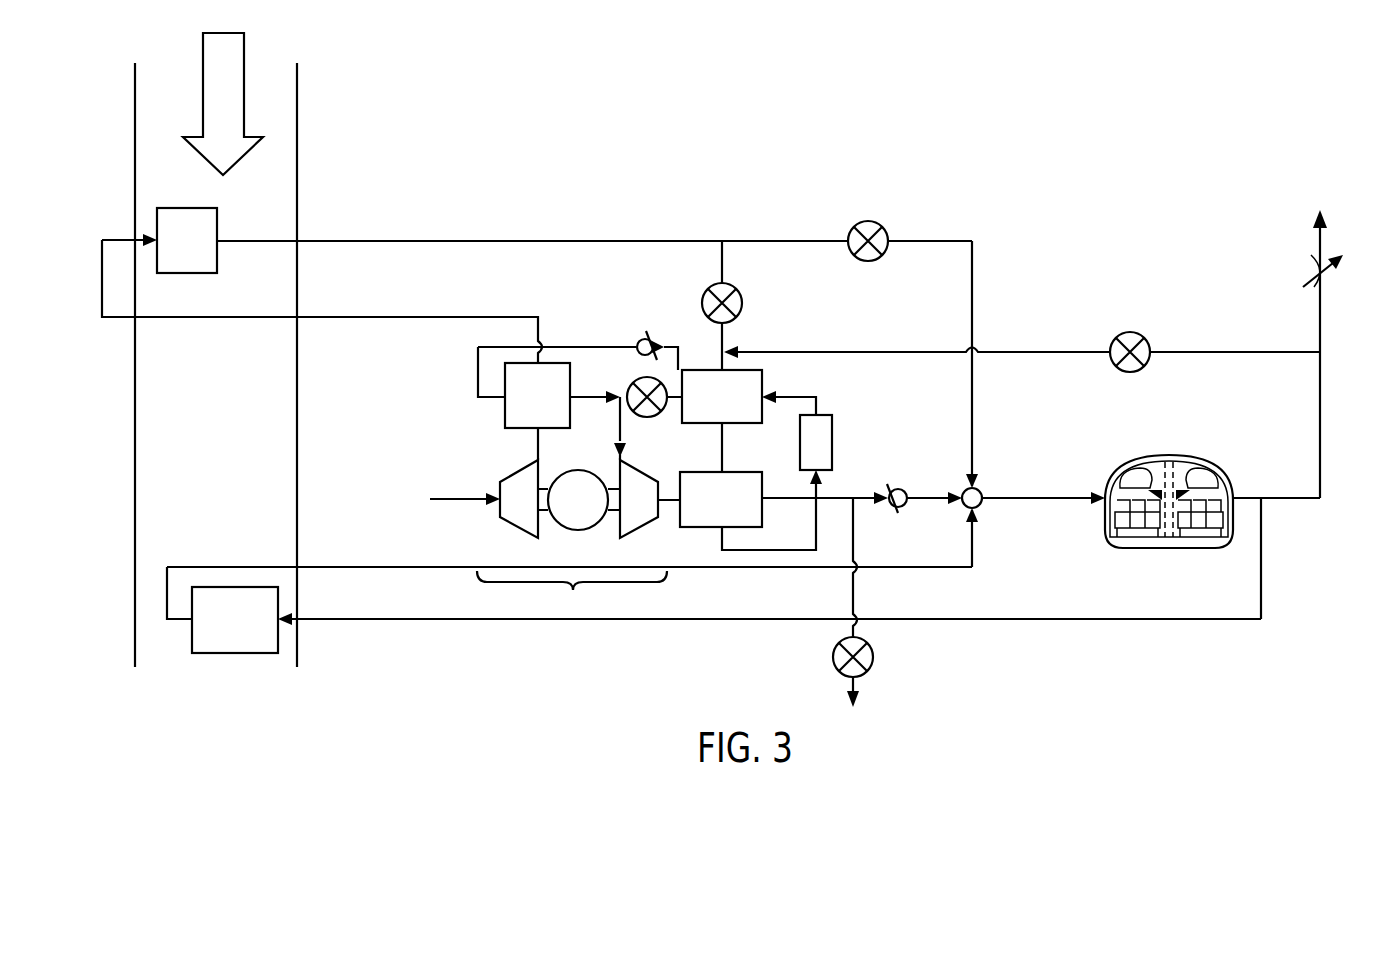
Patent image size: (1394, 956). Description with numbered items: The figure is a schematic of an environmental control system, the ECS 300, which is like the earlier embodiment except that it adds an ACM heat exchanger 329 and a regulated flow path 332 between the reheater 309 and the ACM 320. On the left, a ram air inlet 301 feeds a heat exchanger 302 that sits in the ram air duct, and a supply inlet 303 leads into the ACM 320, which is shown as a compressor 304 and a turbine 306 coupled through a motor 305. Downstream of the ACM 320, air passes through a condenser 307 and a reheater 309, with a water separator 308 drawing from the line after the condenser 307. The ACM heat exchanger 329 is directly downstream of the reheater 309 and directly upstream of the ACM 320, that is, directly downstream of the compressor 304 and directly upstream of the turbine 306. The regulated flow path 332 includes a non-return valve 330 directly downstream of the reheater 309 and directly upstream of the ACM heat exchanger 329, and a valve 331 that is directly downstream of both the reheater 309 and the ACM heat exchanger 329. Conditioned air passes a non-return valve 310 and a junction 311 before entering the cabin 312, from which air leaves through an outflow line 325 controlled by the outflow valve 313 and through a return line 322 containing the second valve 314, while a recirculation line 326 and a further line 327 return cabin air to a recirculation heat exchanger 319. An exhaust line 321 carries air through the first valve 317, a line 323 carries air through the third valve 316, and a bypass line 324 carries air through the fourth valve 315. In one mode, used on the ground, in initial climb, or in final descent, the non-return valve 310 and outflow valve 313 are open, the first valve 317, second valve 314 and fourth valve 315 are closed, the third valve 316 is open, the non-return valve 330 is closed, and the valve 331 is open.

The ECS 300 is at (994, 201).
The ram air inlet 301 is at (246, 52).
The ram air heat exchanger 302 is at (217, 232).
The bleed air inlet 303 is at (436, 498).
The compressor 304 is at (513, 526).
The motor 305 is at (579, 471).
The turbine 306 is at (632, 532).
The condenser 307 is at (713, 528).
The water separator 308 is at (832, 441).
The reheater 309 is at (762, 385).
The non-return valve 310 is at (900, 486).
The mixing junction 311 is at (980, 505).
The cabin 312 is at (1172, 455).
The outflow valve 313 is at (1304, 283).
The second valve 314 is at (1130, 332).
The fourth valve 315 is at (868, 261).
The third valve 316 is at (704, 303).
The first valve 317 is at (834, 651).
The recirculation heat exchanger 319 is at (280, 641).
The ACM 320 is at (572, 593).
The exhaust line 321 is at (856, 600).
The cabin return line 322 is at (1070, 351).
The line 323 is at (722, 273).
The bypass line 324 is at (772, 241).
The cabin outflow line 325 is at (1322, 390).
The recirculation line 326 is at (1262, 576).
The recirculation line 327 is at (1113, 618).
The ACM heat exchanger 329 is at (556, 363).
The non-return valve 330 is at (644, 338).
The valve 331 is at (658, 417).
The regulated flow path 332 is at (478, 375).